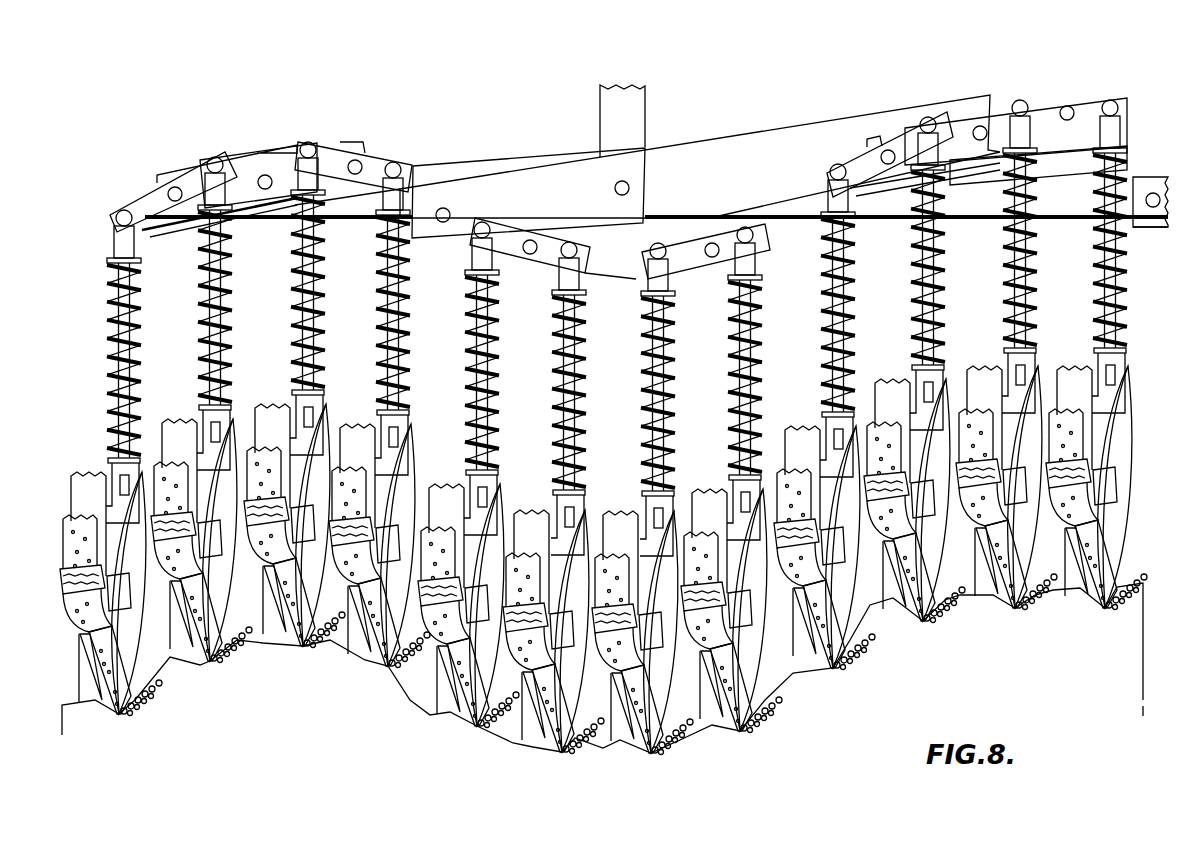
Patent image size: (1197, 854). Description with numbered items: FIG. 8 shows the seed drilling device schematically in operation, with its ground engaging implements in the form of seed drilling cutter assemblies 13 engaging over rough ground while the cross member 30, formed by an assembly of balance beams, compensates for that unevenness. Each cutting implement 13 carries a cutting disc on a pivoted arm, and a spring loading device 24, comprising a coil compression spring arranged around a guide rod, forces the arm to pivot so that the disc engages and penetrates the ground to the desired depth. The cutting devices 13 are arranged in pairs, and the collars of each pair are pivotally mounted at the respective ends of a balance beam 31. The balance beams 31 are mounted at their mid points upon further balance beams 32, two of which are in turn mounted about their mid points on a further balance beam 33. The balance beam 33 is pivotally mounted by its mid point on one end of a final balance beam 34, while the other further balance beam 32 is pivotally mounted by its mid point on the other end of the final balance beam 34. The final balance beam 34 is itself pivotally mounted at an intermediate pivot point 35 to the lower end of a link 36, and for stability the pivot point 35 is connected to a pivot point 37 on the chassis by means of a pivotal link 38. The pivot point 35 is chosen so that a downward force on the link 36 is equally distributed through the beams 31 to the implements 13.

The seed drilling cutter assembly 13 is at (125, 633).
The spring loading device 24 is at (138, 348).
The cross member 30 is at (352, 140).
The balance beam 31 is at (152, 192).
The further balance beam 32 is at (250, 160).
The further balance beam 33 is at (443, 176).
The final balance beam 34 is at (752, 142).
The pivot point 35 is at (615, 188).
The link 36 is at (600, 113).
The pivot point 37 is at (1160, 228).
The pivotal link 38 is at (1150, 175).